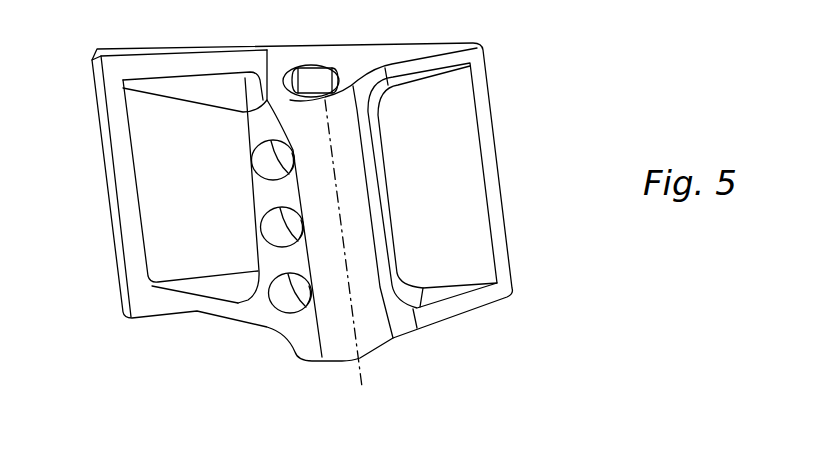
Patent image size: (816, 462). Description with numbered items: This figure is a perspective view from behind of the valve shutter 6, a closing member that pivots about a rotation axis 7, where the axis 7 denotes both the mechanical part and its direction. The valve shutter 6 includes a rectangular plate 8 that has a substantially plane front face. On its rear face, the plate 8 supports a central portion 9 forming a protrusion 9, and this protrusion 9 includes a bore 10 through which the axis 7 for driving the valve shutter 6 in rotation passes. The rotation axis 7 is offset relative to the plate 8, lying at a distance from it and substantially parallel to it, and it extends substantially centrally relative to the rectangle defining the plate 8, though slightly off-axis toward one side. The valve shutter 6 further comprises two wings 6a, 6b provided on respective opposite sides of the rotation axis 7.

The valve shutter 6 is at (507, 75).
The wing 6a is at (163, 160).
The wing 6b is at (471, 195).
The axis 7 is at (323, 90).
The rectangular plate 8 is at (453, 147).
The central portion 9 is at (368, 330).
The bore 10 is at (313, 76).